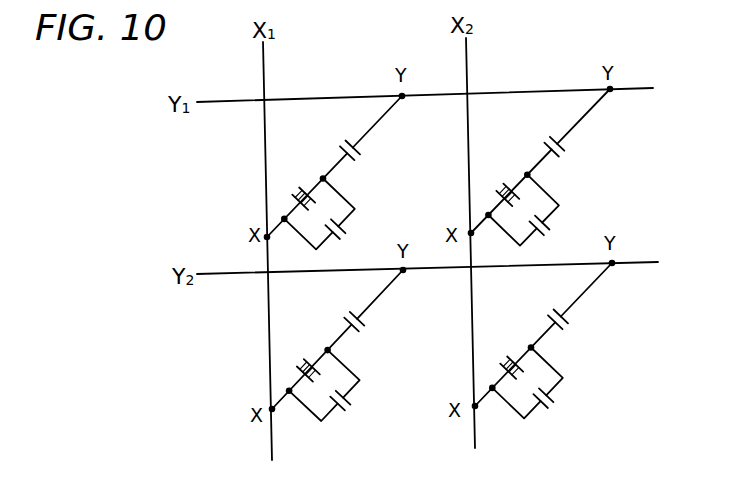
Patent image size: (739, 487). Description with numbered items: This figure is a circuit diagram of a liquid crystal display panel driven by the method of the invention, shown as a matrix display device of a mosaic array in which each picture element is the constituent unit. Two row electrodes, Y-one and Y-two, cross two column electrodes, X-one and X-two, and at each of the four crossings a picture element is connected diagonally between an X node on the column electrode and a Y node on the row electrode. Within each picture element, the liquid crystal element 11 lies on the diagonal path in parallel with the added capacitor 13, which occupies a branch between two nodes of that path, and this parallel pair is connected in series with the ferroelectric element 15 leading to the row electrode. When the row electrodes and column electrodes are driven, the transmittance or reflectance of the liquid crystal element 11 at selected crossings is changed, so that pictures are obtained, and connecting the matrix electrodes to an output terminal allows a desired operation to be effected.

The liquid crystal element 11 is at (298, 187).
The added capacitor 13 is at (334, 236).
The ferroelectric element 15 is at (340, 152).